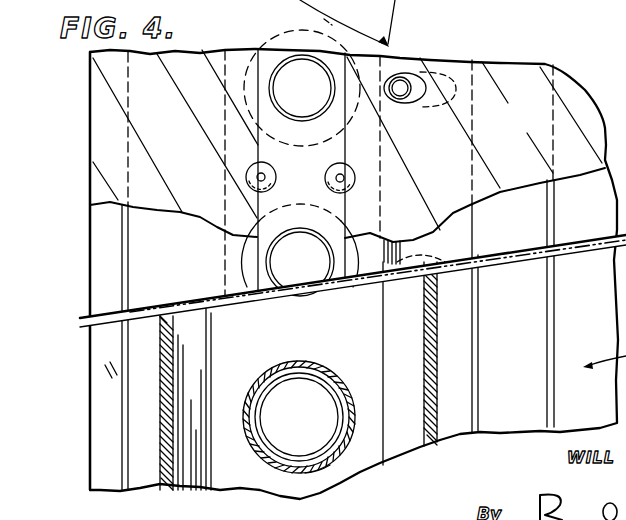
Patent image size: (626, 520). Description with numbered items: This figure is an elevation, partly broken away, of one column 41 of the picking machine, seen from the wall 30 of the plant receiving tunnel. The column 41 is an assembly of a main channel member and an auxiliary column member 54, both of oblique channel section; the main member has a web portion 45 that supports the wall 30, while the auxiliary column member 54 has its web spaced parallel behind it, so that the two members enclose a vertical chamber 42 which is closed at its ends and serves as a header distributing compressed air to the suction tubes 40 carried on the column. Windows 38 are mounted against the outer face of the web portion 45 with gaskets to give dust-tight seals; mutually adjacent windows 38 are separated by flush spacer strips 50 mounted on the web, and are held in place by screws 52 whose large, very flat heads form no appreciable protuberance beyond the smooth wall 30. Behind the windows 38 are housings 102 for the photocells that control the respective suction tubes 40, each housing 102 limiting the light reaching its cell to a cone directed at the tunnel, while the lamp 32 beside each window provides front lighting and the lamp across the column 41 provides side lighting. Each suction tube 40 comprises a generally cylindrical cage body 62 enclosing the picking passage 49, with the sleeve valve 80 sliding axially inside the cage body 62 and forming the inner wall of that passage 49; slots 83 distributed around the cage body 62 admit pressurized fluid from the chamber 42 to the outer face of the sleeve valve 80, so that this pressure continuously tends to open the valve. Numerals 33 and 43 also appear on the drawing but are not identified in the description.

The wall 30 is at (104, 151).
The lamp 32 is at (112, 298).
The intermediate frame member 33 is at (184, 282).
The window 38 is at (203, 166).
The suction tube 40 is at (284, 51).
The column 41 is at (149, 470).
The vertical chamber 42 is at (240, 473).
The fastener opening 43 is at (307, 99).
The web portion 45 is at (240, 288).
The picking passage 49 is at (308, 426).
The spacer strip 50 is at (311, 188).
The screw 52 is at (253, 185).
The auxiliary column member 54 is at (408, 387).
The cage body 62 is at (346, 371).
The sleeve valve 80 is at (277, 377).
The slot 83 is at (316, 476).
The housing 102 is at (424, 108).